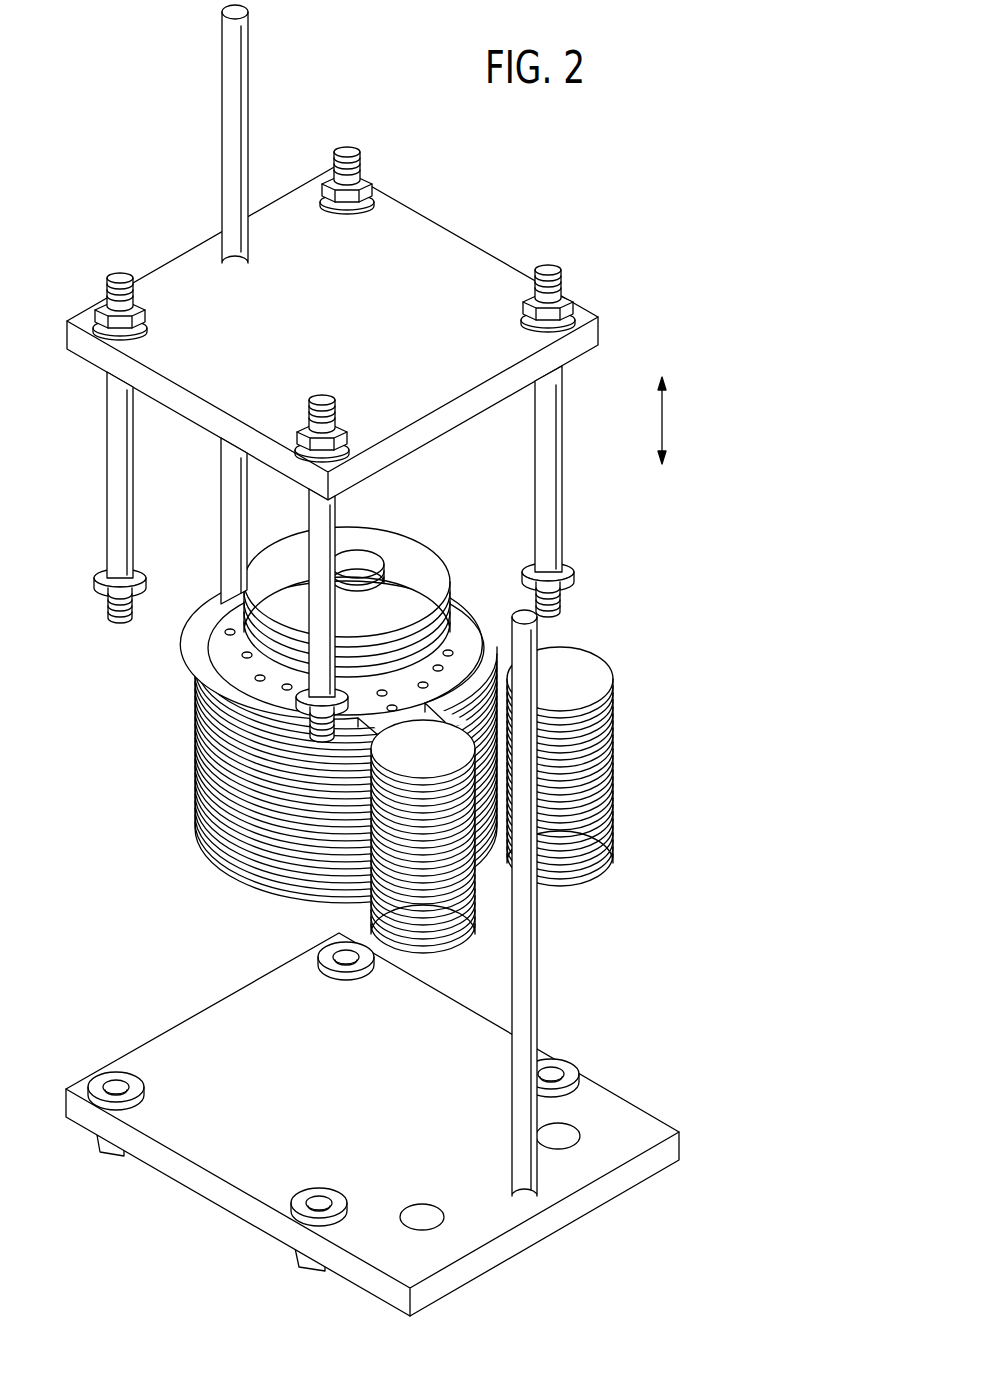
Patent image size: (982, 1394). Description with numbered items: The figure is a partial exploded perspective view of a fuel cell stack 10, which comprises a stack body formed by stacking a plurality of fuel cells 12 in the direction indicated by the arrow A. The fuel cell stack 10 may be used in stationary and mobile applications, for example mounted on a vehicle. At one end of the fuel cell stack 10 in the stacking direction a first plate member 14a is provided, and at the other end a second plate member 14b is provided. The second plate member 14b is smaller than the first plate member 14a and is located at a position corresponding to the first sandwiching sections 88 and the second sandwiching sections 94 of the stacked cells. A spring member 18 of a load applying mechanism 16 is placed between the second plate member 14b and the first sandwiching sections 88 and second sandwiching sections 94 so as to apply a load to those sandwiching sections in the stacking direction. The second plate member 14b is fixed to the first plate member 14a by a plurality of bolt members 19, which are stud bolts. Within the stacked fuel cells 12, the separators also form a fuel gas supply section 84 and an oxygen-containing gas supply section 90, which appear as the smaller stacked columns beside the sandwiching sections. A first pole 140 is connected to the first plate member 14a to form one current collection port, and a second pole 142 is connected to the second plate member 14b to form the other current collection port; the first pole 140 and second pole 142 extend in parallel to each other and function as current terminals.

The fuel cell stack 10 is at (642, 162).
The fuel cells 12 is at (213, 787).
The first plate member 14a is at (595, 1199).
The second plate member 14b is at (456, 256).
The load applying mechanism 16 is at (406, 567).
The spring member 18 is at (391, 548).
The bolt members 19 is at (112, 466).
The fuel gas supply section 84 is at (587, 712).
The first sandwiching section 88 is at (233, 613).
The oxygen-containing gas supply section 90 is at (397, 790).
The second sandwiching section 94 is at (311, 638).
The first pole 140 is at (524, 961).
The second pole 142 is at (230, 78).